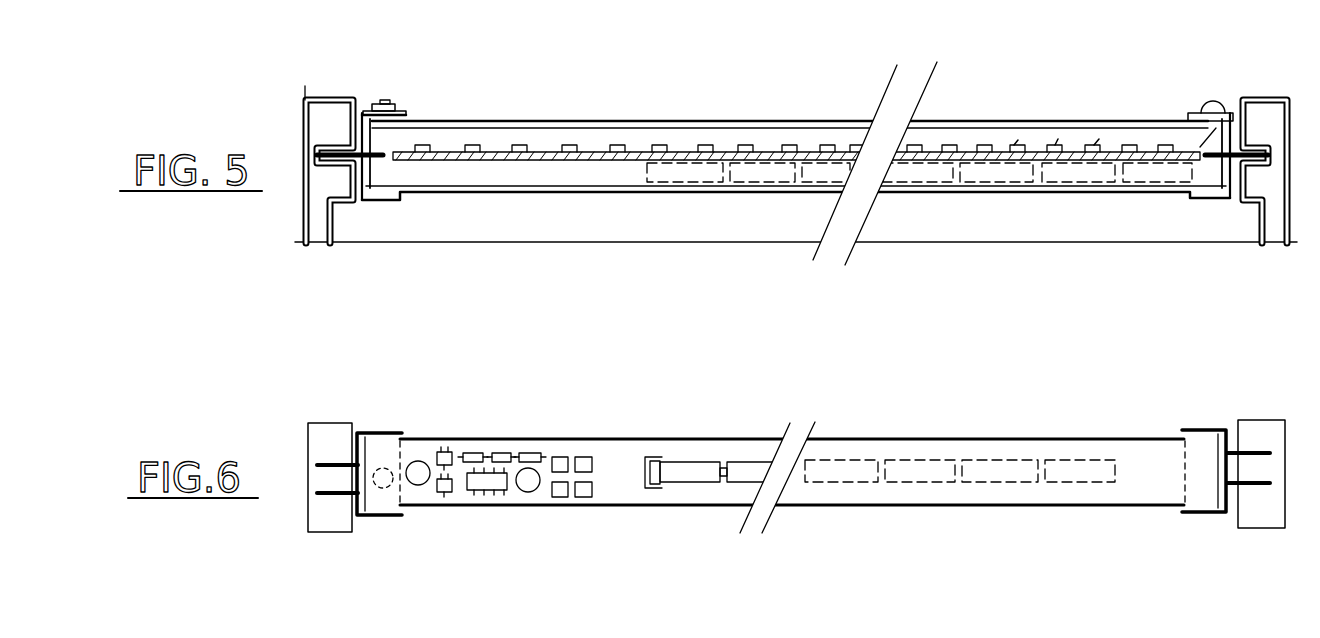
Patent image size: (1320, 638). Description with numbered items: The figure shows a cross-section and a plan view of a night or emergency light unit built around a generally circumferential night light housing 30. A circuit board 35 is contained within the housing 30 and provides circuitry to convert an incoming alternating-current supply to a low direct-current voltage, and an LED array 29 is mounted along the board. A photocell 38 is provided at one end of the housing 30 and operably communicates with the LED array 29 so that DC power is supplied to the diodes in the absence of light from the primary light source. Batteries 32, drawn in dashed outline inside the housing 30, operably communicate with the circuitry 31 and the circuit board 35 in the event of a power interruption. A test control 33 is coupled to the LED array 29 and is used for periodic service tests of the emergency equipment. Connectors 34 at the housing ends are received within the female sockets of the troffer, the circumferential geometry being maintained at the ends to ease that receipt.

In FIG. 5, the LED array 29 is at (1094, 143).
In FIG. 5, the night light housing 30 is at (676, 197).
In FIG. 5, the circuitry 31 is at (548, 172).
In FIG. 6, the circuitry 31 is at (583, 491).
In FIG. 5, the batteries 32 is at (1072, 173).
In FIG. 6, the batteries 32 is at (992, 472).
In FIG. 5, the test control 33 is at (392, 98).
In FIG. 6, the connectors 34 is at (1257, 450).
In FIG. 5, the circuit board 35 is at (598, 150).
In FIG. 6, the circuit board 35 is at (619, 467).
In FIG. 5, the photocell 38 is at (1211, 99).
In FIG. 6, the photocell 38 is at (381, 470).